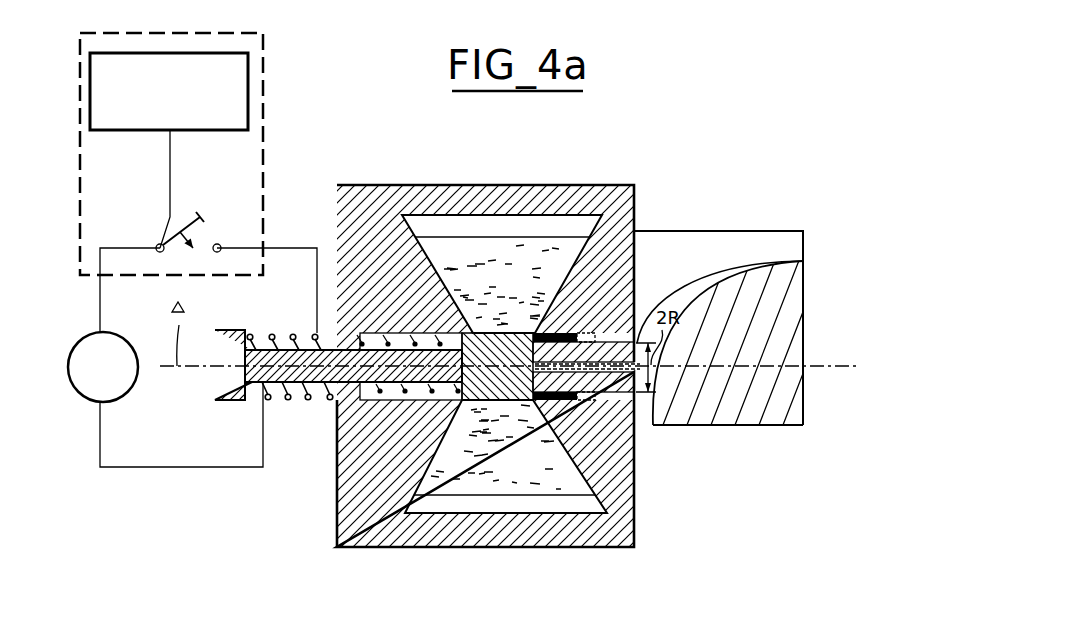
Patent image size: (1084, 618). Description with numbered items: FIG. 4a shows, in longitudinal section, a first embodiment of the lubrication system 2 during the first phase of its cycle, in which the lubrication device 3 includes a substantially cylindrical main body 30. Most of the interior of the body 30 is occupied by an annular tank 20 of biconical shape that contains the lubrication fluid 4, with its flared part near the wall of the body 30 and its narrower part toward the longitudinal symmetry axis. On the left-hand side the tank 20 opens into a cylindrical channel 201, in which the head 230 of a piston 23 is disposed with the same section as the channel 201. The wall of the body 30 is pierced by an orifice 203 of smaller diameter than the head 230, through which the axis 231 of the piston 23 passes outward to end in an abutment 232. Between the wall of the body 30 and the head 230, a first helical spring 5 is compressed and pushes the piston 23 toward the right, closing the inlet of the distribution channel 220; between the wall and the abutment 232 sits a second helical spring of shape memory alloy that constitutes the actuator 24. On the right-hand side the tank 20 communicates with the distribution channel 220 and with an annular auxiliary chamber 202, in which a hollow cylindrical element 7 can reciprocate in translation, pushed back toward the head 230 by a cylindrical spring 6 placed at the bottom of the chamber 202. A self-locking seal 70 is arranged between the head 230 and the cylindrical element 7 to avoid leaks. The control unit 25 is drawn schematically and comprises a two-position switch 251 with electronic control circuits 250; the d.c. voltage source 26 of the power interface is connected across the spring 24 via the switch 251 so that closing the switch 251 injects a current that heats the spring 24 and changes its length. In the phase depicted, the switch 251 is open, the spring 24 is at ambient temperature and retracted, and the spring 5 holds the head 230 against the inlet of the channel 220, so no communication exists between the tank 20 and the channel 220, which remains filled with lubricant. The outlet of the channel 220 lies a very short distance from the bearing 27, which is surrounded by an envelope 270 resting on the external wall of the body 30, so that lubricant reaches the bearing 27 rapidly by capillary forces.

The system 2 is at (70, 288).
The lubrication device 3 is at (532, 184).
The lubrication fluid 4 is at (485, 262).
The spring 5 is at (338, 498).
The cylindrical spring 6 is at (555, 403).
The hollow cylindrical element 7 is at (570, 402).
The annular tank 20 is at (540, 225).
The piston 23 is at (478, 410).
The actuator 24 is at (305, 392).
The control unit 25 is at (77, 55).
The voltage source 26 is at (74, 387).
The bearing 27 is at (792, 295).
The main body 30 is at (590, 185).
The self-locking seal 70 is at (560, 312).
The cylindrical channel 201 is at (375, 333).
The annular auxiliary chamber 202 is at (533, 398).
The orifice 203 is at (344, 340).
The distribution channel 220 is at (597, 400).
The head 230 is at (515, 403).
The axis 231 is at (325, 398).
The abutment 232 is at (230, 394).
The electronic control circuits 250 is at (248, 77).
The switch 251 is at (198, 215).
The envelope 270 is at (725, 240).